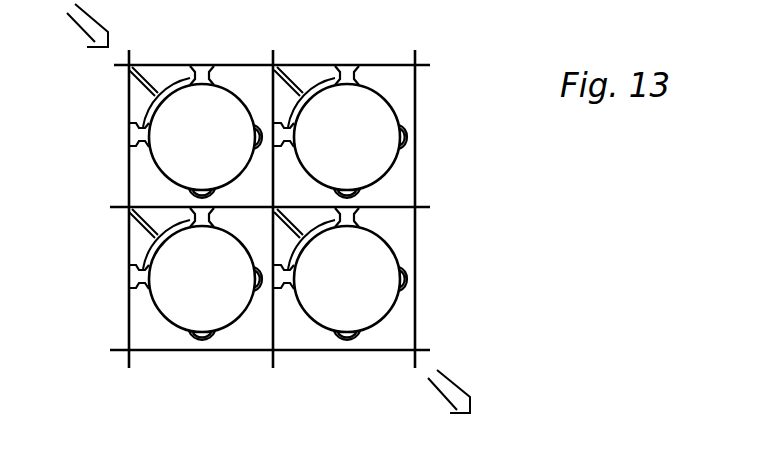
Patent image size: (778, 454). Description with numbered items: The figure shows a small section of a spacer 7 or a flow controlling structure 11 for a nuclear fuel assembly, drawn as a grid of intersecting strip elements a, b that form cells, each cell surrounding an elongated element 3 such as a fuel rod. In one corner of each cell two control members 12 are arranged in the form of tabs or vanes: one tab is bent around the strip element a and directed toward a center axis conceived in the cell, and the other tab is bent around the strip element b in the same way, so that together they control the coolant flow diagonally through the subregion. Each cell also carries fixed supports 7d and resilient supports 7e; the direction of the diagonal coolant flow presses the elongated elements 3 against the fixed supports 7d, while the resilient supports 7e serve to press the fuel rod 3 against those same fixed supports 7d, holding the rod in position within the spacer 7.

The spacer 7 is at (307, 188).
The flow controlling structure 11 is at (307, 188).
The elongated element 3 is at (367, 155).
The resilient support 7e is at (349, 219).
The fixed support 7d is at (408, 278).
The control member 12 is at (138, 103).
The strip element a is at (128, 168).
The strip element b is at (229, 65).